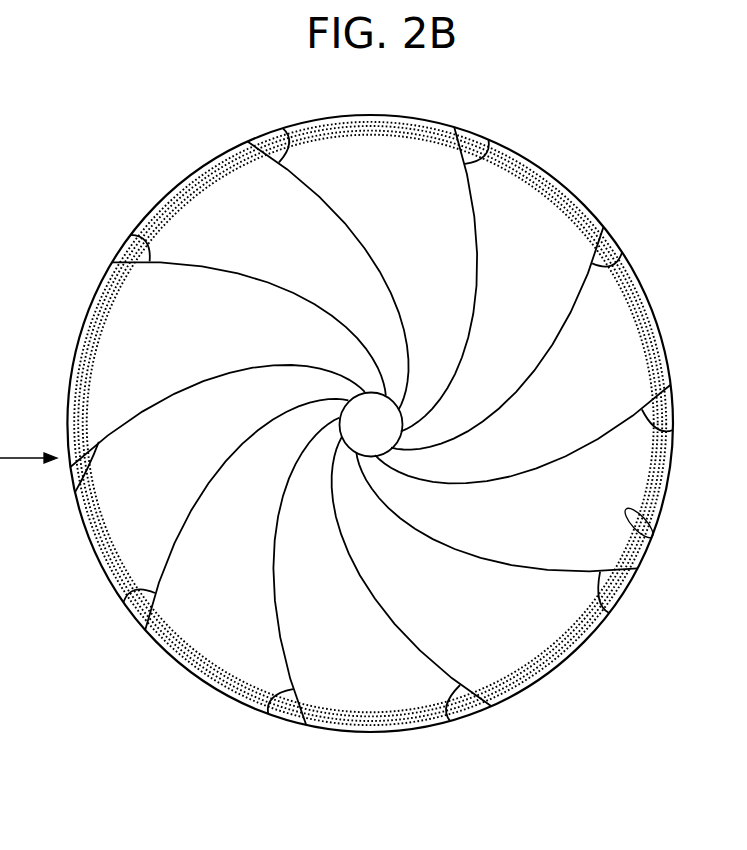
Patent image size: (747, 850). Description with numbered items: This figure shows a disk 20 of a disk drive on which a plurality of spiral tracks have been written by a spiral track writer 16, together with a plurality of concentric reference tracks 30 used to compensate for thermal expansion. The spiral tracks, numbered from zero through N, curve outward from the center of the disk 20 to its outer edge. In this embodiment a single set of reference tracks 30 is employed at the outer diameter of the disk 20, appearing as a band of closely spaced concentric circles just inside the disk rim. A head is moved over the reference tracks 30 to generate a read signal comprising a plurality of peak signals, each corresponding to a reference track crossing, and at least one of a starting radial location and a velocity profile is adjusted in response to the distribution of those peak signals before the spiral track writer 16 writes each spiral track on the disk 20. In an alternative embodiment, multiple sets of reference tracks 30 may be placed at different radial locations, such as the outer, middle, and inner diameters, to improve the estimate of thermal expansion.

The spiral track writer 16 is at (0, 131).
The disk 20 is at (567, 177).
The reference tracks 30 is at (655, 540).